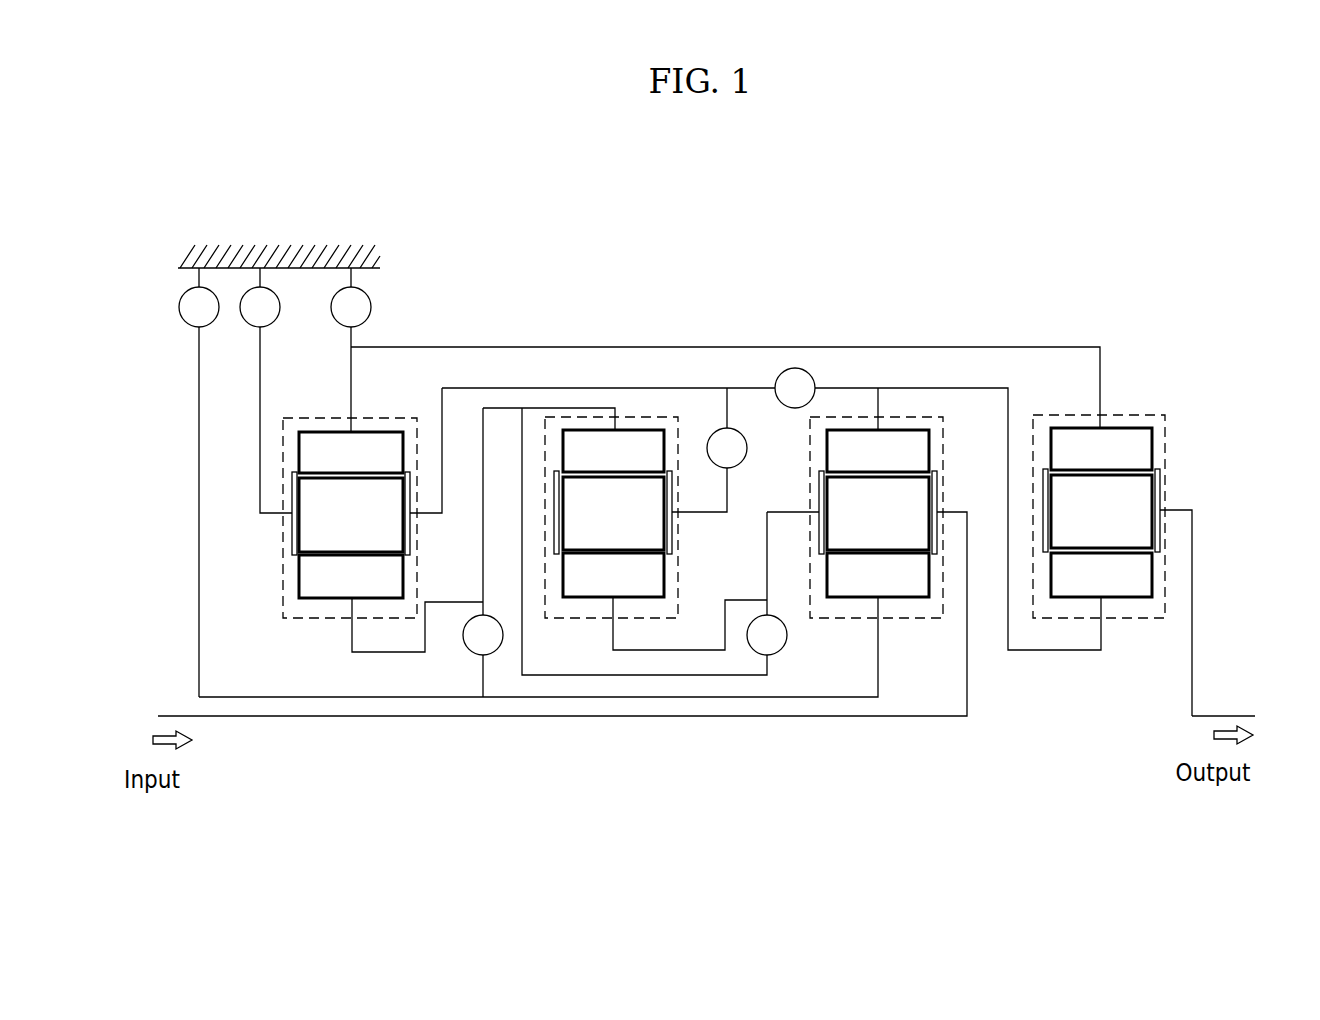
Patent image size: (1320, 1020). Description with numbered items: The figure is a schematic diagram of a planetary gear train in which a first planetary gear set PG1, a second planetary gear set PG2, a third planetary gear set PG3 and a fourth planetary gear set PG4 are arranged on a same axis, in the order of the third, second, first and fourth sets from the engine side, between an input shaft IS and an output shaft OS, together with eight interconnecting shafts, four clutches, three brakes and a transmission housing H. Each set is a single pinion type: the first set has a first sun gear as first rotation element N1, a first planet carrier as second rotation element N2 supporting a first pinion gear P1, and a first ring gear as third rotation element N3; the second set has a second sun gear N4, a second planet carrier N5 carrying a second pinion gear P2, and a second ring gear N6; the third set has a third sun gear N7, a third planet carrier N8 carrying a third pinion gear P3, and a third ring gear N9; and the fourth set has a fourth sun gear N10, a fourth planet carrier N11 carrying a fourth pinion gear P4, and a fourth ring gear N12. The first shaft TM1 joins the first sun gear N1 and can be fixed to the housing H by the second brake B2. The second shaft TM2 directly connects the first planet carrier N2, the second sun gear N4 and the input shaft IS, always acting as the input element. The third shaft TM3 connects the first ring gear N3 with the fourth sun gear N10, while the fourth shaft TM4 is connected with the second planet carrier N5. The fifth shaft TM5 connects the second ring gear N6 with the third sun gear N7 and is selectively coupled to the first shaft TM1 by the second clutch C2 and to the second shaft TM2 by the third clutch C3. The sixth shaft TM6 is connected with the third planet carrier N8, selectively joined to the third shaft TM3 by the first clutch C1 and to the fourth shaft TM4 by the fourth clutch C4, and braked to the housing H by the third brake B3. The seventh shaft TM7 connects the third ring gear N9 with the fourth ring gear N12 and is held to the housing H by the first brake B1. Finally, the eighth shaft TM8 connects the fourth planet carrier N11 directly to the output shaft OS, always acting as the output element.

The transmission housing H is at (272, 262).
The first brake B1 is at (351, 350).
The second brake B2 is at (199, 482).
The third brake B3 is at (266, 390).
The first clutch C1 is at (795, 388).
The second clutch C2 is at (483, 635).
The third clutch C3 is at (767, 635).
The fourth clutch C4 is at (727, 448).
The first planetary gear set PG1 is at (910, 620).
The second planetary gear set PG2 is at (578, 620).
The third planetary gear set PG3 is at (328, 620).
The fourth planetary gear set PG4 is at (1120, 620).
The first rotation element N1 is at (878, 575).
The second rotation element N2 is at (937, 470).
The third rotation element N3 is at (878, 451).
The fourth rotation element N4 is at (613, 575).
The fifth rotation element N5 is at (673, 538).
The sixth rotation element N6 is at (613, 451).
The seventh rotation element N7 is at (351, 576).
The eighth rotation element N8 is at (292, 542).
The ninth rotation element N9 is at (351, 452).
The tenth rotation element N10 is at (1101, 575).
The eleventh rotation element N11 is at (1162, 483).
The twelfth rotation element N12 is at (1101, 449).
The first pinion gear P1 is at (878, 513).
The second pinion gear P2 is at (613, 513).
The third pinion gear P3 is at (351, 515).
The fourth pinion gear P4 is at (1101, 511).
The first shaft TM1 is at (745, 700).
The second shaft TM2 is at (783, 510).
The third shaft TM3 is at (950, 386).
The fourth shaft TM4 is at (697, 510).
The fifth shaft TM5 is at (508, 407).
The sixth shaft TM6 is at (622, 388).
The seventh shaft TM7 is at (848, 345).
The eighth shaft TM8 is at (1194, 556).
The input shaft IS is at (460, 718).
The output shaft OS is at (1232, 712).